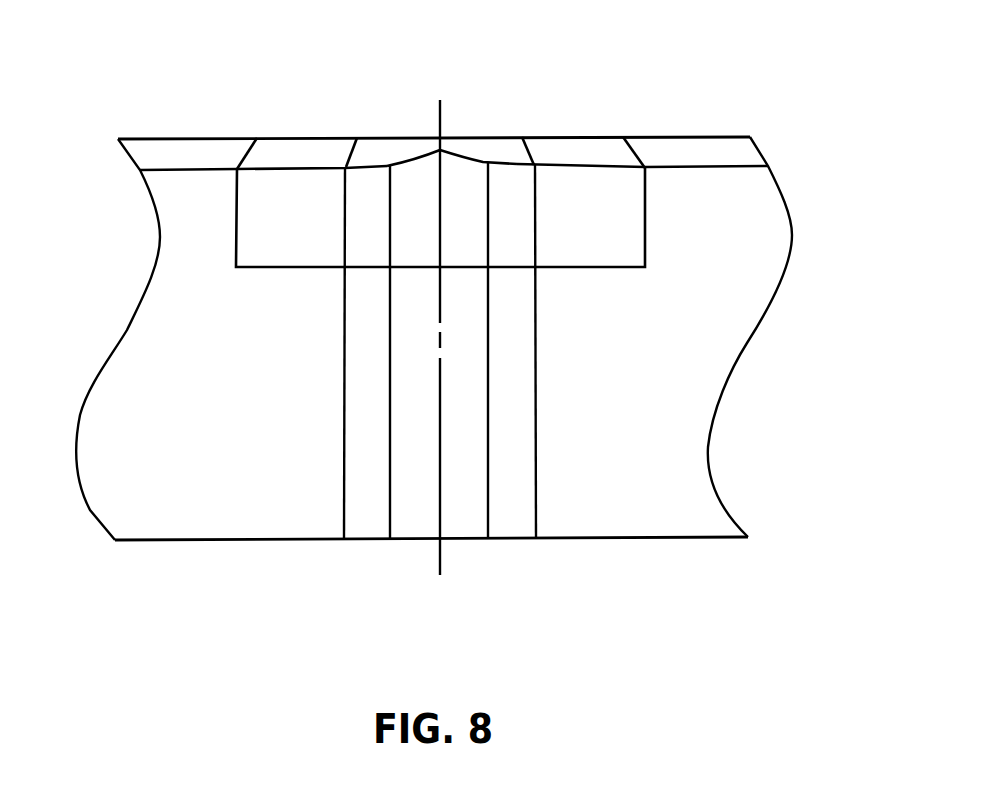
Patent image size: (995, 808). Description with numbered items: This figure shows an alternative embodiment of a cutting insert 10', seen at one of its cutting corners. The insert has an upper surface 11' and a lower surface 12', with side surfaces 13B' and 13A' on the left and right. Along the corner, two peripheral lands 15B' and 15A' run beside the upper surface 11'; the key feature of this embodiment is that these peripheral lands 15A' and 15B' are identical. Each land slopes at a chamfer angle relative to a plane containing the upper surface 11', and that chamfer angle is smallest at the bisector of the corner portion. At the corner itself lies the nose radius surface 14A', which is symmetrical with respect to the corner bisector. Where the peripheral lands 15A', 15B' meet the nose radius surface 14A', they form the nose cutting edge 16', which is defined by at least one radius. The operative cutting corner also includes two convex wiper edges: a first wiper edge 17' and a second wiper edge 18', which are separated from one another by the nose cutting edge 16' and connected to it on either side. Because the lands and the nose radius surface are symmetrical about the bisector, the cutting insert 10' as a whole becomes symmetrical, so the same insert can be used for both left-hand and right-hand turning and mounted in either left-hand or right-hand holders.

The cutting insert 10' is at (454, 136).
The upper surface 11' is at (434, 83).
The bottom surface 12' is at (431, 588).
The right side wall 13A' is at (758, 337).
The left side wall 13B' is at (98, 339).
The nose radius surface 14A' is at (389, 370).
The peripheral land 15A' is at (583, 98).
The peripheral land 15B' is at (297, 88).
The nose cutting edge 16' is at (452, 86).
The first wiper edge 17' is at (330, 351).
The second wiper edge 18' is at (544, 350).